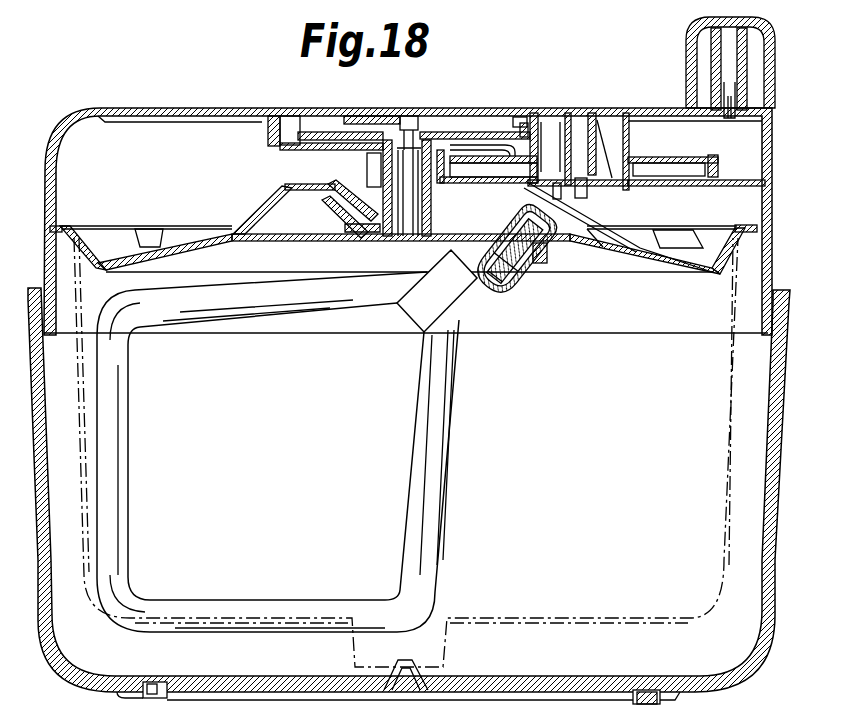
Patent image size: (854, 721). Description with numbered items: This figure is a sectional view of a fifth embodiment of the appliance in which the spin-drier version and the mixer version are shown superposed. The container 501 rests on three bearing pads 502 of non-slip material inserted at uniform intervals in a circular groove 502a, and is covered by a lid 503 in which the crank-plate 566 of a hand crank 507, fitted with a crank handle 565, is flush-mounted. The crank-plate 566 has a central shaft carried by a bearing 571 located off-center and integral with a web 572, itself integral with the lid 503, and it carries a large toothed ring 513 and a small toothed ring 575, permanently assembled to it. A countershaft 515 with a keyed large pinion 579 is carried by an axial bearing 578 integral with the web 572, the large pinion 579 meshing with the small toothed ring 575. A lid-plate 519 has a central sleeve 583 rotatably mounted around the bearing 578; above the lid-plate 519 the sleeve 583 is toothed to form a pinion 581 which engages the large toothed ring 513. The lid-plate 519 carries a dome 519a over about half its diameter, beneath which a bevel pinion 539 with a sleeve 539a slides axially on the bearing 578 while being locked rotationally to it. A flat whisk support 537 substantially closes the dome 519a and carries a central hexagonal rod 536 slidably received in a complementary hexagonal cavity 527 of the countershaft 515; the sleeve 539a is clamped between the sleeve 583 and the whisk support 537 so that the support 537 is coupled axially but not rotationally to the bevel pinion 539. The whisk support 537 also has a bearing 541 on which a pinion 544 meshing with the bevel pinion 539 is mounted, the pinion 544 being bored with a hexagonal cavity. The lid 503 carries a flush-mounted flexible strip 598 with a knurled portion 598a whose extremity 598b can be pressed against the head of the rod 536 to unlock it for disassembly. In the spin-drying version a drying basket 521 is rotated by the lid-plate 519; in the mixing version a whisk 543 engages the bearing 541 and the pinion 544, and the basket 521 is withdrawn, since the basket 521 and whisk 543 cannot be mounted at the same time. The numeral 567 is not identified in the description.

The container 501 is at (765, 650).
The bearing pads 502 is at (290, 690).
The circular groove 502a is at (158, 683).
The lid 503 is at (774, 190).
The hand crank 507 is at (563, 106).
The large toothed ring 513 is at (735, 158).
The countershaft 515 is at (392, 240).
The lid-plate 519 is at (633, 281).
The dome 519a is at (266, 207).
The drying basket 521 is at (728, 418).
The hexagonal cavity 527 is at (437, 291).
The hexagonal rod 536 is at (426, 240).
The whisk support 537 is at (278, 246).
The bevel pinion 539 is at (340, 215).
The sleeve 539a is at (340, 243).
The bearing 541 is at (512, 290).
The whisk 543 is at (450, 488).
The pinion 544 is at (547, 260).
The crank handle 565 is at (686, 52).
The crank-plate 566 is at (645, 110).
The partition wall 567 is at (575, 112).
The bearing 571 is at (609, 187).
The web 572 is at (713, 192).
The small toothed ring 575 is at (636, 140).
The axial bearing 578 is at (480, 137).
The large pinion 579 is at (290, 122).
The pinion 581 is at (367, 163).
The sleeve 583 is at (450, 135).
The flexible strip 598 is at (222, 110).
The knurled portion 598a is at (346, 114).
The extremity 598b is at (412, 116).